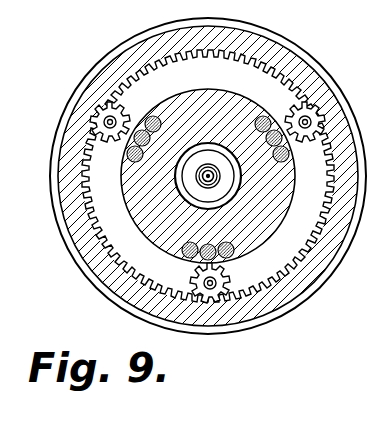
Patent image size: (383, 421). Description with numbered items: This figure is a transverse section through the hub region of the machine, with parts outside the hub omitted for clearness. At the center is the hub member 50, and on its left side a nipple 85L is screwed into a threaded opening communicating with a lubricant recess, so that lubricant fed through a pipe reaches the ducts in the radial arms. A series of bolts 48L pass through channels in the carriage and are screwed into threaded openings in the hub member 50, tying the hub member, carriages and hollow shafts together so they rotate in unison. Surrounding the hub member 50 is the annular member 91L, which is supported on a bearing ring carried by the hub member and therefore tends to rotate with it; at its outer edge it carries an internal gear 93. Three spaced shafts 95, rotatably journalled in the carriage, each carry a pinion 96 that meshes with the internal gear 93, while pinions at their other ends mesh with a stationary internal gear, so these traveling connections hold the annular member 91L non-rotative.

The nipple 85L is at (213, 158).
The shaft 95 is at (118, 116).
The pinion 96 is at (102, 135).
The bolt 48L is at (289, 160).
The hub member 50 is at (146, 223).
The internal gear 93 is at (291, 270).
The annular member 91L is at (300, 282).